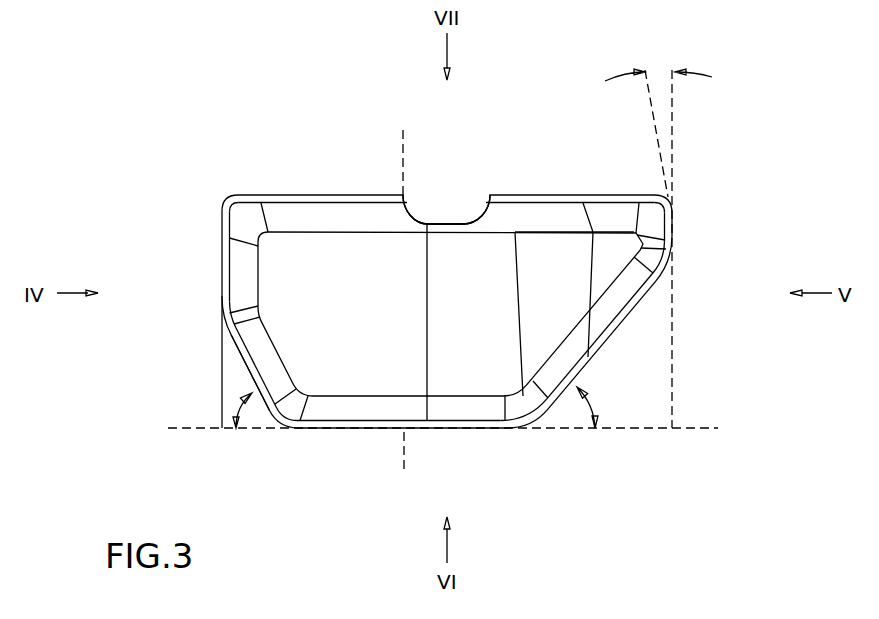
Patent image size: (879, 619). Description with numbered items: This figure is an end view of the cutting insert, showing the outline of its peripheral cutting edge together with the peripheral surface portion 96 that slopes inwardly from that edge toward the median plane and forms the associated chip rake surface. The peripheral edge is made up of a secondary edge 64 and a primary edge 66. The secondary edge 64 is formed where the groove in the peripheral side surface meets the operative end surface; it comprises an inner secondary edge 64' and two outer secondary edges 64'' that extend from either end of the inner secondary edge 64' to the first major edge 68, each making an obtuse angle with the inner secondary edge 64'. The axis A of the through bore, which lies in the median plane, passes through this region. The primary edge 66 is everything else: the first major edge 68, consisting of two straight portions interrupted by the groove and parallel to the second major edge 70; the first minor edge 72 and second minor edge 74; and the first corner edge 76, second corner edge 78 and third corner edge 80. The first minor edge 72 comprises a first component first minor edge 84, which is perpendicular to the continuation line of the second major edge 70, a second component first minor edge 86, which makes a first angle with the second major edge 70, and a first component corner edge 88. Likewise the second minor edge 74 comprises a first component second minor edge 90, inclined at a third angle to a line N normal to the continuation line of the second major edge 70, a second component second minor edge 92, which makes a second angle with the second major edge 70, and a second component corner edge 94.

The secondary edge 64 is at (447, 153).
The inner secondary edge 64' is at (474, 172).
The outer secondary edge 64'' is at (481, 175).
The primary edge 66 is at (373, 432).
The first major edge 68 is at (315, 197).
The second major edge 70 is at (453, 432).
The first minor edge 72 is at (237, 348).
The second minor edge 74 is at (630, 314).
The first corner edge 76 is at (227, 197).
The second corner edge 78 is at (279, 431).
The third corner edge 80 is at (543, 428).
The first component first minor edge 84 is at (221, 258).
The second component first minor edge 86 is at (248, 377).
The first component corner edge 88 is at (222, 318).
The first component second minor edge 90 is at (672, 213).
The second component second minor edge 92 is at (605, 350).
The second component corner edge 94 is at (676, 243).
The peripheral surface portion 96 is at (547, 217).
The axis A is at (402, 160).
The line normal to a continuation line of the second major edge N is at (673, 125).